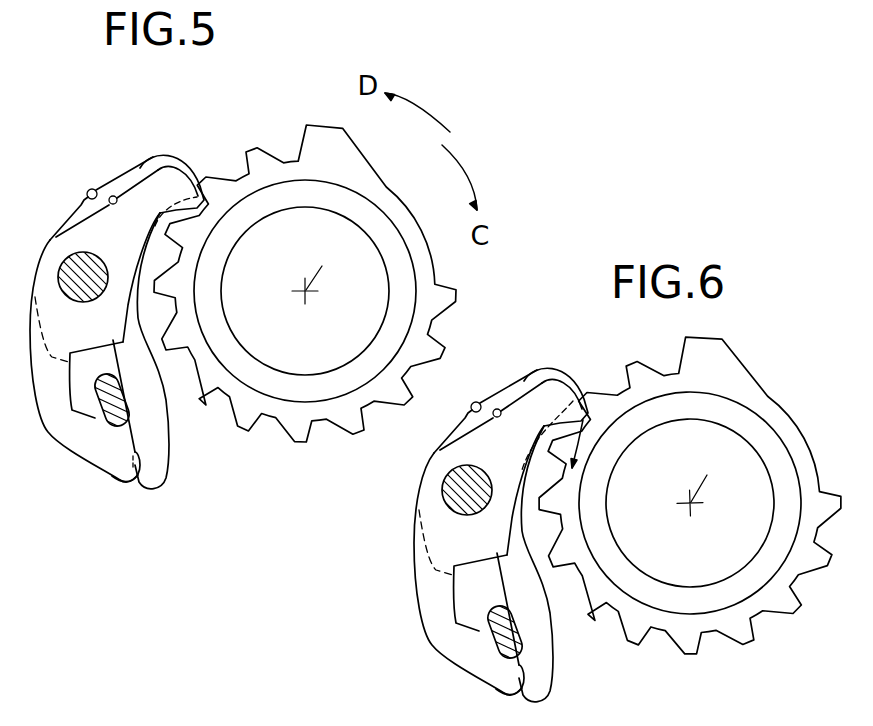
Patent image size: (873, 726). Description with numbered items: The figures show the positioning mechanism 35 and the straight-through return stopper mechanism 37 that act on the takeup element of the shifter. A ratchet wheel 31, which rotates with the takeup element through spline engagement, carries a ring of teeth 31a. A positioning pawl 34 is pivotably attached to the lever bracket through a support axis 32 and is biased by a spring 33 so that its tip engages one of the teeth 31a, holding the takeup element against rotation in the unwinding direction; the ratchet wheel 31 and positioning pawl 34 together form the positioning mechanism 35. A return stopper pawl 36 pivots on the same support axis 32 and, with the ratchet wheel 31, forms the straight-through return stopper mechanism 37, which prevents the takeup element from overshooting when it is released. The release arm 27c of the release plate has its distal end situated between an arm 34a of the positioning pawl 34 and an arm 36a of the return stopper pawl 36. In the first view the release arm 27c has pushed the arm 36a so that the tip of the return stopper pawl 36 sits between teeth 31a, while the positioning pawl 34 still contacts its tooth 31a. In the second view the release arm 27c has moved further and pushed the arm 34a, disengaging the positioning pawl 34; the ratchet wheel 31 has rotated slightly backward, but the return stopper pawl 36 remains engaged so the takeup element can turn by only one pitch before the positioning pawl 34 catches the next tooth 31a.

In FIG. 5, the release arm 27c is at (106, 412).
In FIG. 6, the release arm 27c is at (482, 632).
In FIG. 5, the ratchet wheel 31 is at (305, 288).
In FIG. 6, the ratchet wheel 31 is at (690, 508).
In FIG. 5, the teeth 31a is at (213, 182).
In FIG. 6, the teeth 31a is at (598, 393).
In FIG. 5, the support axis 32 is at (62, 267).
In FIG. 6, the support axis 32 is at (428, 499).
In FIG. 5, the spring 33 is at (87, 190).
In FIG. 5, the positioning pawl 34 is at (110, 184).
In FIG. 6, the positioning pawl 34 is at (488, 385).
In FIG. 5, the arm of the positioning pawl 34a is at (162, 471).
In FIG. 6, the arm of the positioning pawl 34a is at (579, 564).
In FIG. 5, the positioning mechanism 35 is at (188, 118).
In FIG. 5, the return stopper pawl 36 is at (155, 184).
In FIG. 6, the return stopper pawl 36 is at (556, 367).
In FIG. 5, the arm of the return stopper pawl 36a is at (117, 481).
In FIG. 6, the arm of the return stopper pawl 36a is at (432, 649).
In FIG. 5, the straight-through return stopper mechanism 37 is at (65, 128).